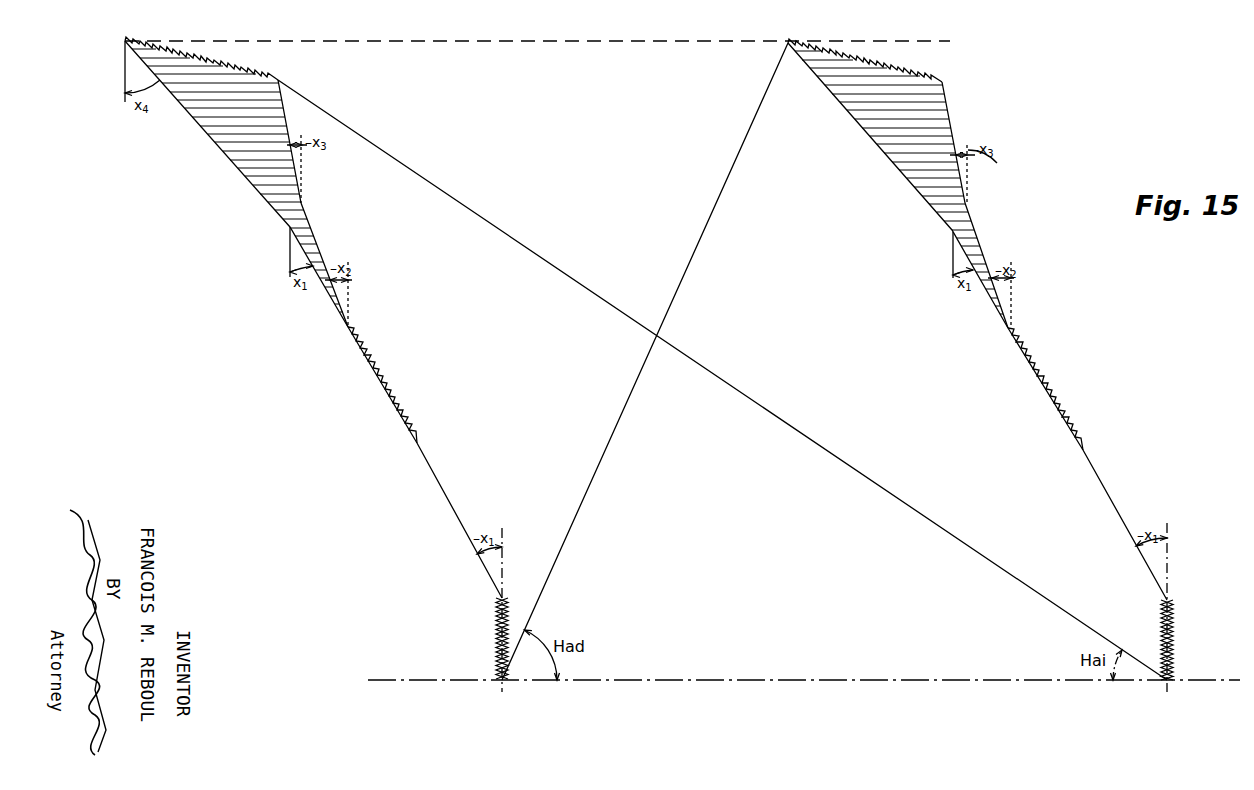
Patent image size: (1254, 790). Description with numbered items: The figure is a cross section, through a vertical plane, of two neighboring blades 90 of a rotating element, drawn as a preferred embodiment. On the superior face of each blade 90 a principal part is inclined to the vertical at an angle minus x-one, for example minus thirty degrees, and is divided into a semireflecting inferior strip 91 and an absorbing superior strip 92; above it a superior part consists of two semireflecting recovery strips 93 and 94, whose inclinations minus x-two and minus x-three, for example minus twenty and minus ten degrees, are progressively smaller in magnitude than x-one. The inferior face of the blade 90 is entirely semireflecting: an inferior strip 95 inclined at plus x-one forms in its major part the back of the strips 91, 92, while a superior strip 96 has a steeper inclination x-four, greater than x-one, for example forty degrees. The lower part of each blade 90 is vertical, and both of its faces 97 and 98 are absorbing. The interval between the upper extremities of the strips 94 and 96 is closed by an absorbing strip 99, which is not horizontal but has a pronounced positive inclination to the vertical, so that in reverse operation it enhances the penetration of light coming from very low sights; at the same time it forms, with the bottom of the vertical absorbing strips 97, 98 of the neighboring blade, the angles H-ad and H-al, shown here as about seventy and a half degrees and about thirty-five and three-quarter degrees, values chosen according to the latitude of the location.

The blade 90 is at (295, 128).
The semireflecting inferior strip 91 is at (463, 523).
The absorbing superior strip 92 is at (395, 398).
The semireflecting recovery strip 93 is at (320, 253).
The semireflecting recovery strip 94 is at (292, 104).
The inferior strip 95 is at (428, 470).
The superior strip 96 is at (237, 165).
The absorbing face 97 is at (508, 628).
The absorbing face 98 is at (496, 614).
The absorbing strip 99 is at (240, 63).